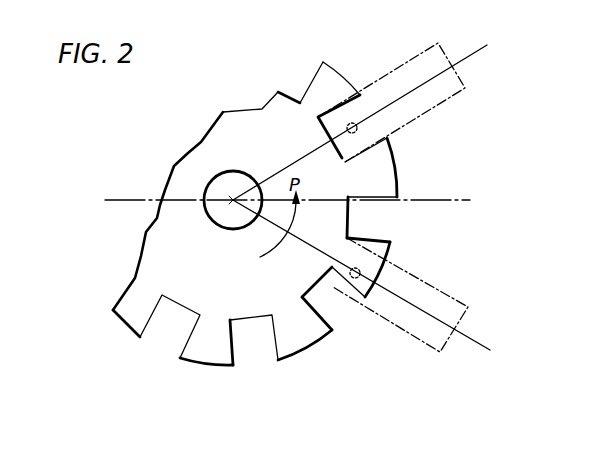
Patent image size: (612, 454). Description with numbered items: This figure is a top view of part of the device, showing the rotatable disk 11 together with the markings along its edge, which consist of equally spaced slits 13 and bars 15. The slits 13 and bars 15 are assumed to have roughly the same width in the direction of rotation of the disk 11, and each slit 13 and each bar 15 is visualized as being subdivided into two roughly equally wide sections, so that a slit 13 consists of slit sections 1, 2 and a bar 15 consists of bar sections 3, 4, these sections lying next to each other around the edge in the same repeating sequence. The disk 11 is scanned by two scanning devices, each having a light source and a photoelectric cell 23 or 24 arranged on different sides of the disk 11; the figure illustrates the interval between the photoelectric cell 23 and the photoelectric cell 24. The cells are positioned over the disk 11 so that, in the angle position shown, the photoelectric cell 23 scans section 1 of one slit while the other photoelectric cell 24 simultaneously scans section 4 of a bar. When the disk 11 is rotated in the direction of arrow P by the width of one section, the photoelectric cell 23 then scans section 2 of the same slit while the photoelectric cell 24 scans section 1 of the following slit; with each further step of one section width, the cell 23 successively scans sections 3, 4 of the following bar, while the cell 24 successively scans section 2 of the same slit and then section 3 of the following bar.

The rotatable disk 11 is at (173, 253).
The slit 13 is at (177, 330).
The bar 15 is at (290, 337).
The photoelectric cell 23 is at (357, 130).
The photoelectric cell 24 is at (362, 271).
The slit section 1 is at (296, 225).
The slit section 2 is at (316, 219).
The bar section 3 is at (308, 231).
The bar section 4 is at (301, 245).